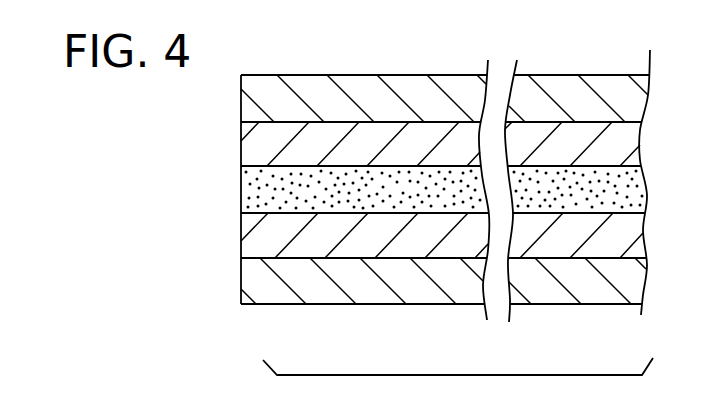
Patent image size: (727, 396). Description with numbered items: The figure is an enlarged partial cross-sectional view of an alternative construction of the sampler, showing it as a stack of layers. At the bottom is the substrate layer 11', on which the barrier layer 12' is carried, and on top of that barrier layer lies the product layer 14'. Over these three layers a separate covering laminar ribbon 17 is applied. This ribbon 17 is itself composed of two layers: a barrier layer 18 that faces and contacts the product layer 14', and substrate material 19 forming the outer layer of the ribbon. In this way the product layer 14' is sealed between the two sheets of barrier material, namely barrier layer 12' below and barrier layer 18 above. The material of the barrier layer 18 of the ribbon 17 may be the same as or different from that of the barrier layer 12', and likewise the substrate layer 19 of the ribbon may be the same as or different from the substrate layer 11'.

The covering laminar ribbon 17 is at (217, 75).
The substrate material 19 is at (310, 90).
The barrier layer 18 is at (383, 132).
The product layer 14' is at (443, 261).
The barrier layer 12' is at (443, 287).
The substrate layer 11' is at (443, 316).